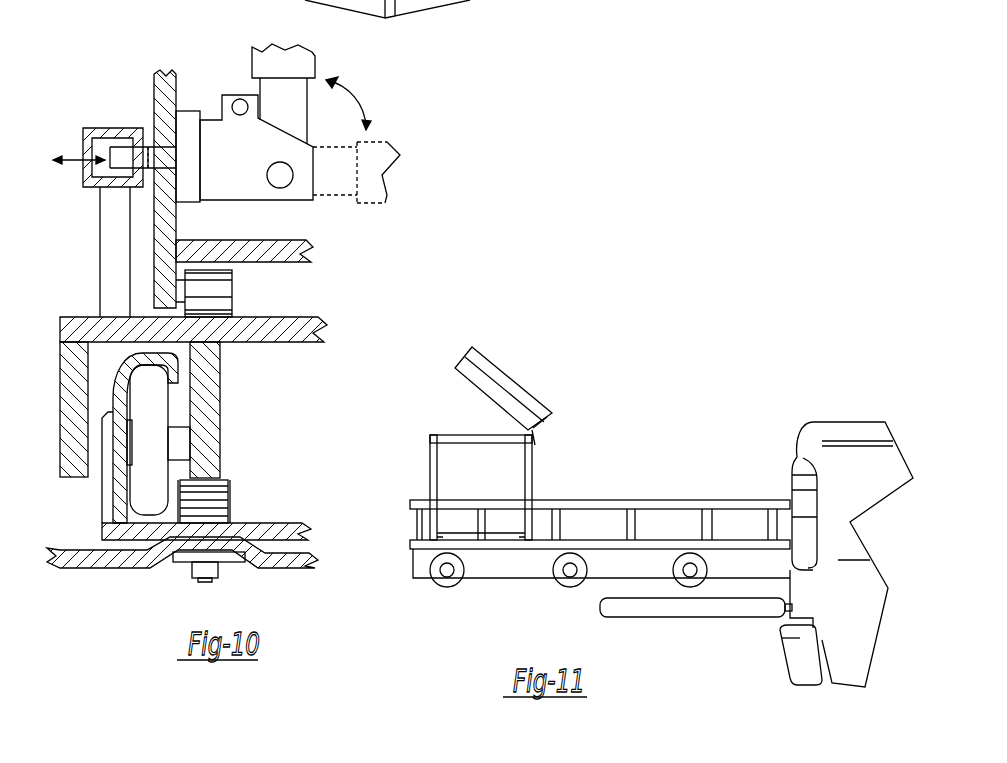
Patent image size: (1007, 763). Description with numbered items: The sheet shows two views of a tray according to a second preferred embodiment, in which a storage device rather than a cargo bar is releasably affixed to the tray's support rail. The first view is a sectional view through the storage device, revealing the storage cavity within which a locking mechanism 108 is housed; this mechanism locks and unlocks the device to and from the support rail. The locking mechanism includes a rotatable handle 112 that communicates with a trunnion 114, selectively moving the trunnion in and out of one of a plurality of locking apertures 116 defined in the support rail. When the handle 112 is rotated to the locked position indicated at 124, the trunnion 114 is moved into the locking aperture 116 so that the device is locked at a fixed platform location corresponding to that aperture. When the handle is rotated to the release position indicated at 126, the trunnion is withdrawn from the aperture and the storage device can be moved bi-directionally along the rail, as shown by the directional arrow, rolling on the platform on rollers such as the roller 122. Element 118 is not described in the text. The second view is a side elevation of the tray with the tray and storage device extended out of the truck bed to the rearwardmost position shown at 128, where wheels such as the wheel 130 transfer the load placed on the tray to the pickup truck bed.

In FIG. 10, the locking mechanism 108 is at (230, 95).
In FIG. 10, the rotatable handle 112 is at (320, 64).
In FIG. 10, the trunnion 114 is at (106, 141).
In FIG. 10, the locking aperture 116 is at (148, 144).
In FIG. 10, the support post 118 is at (85, 188).
In FIG. 10, the roller 122 is at (223, 292).
In FIG. 10, the locked position 124 is at (377, 205).
In FIG. 10, the release position 126 is at (262, 44).
In FIG. 11, the rearwardmost position of the tray 128 is at (670, 462).
In FIG. 10, the wheel 130 is at (143, 470).